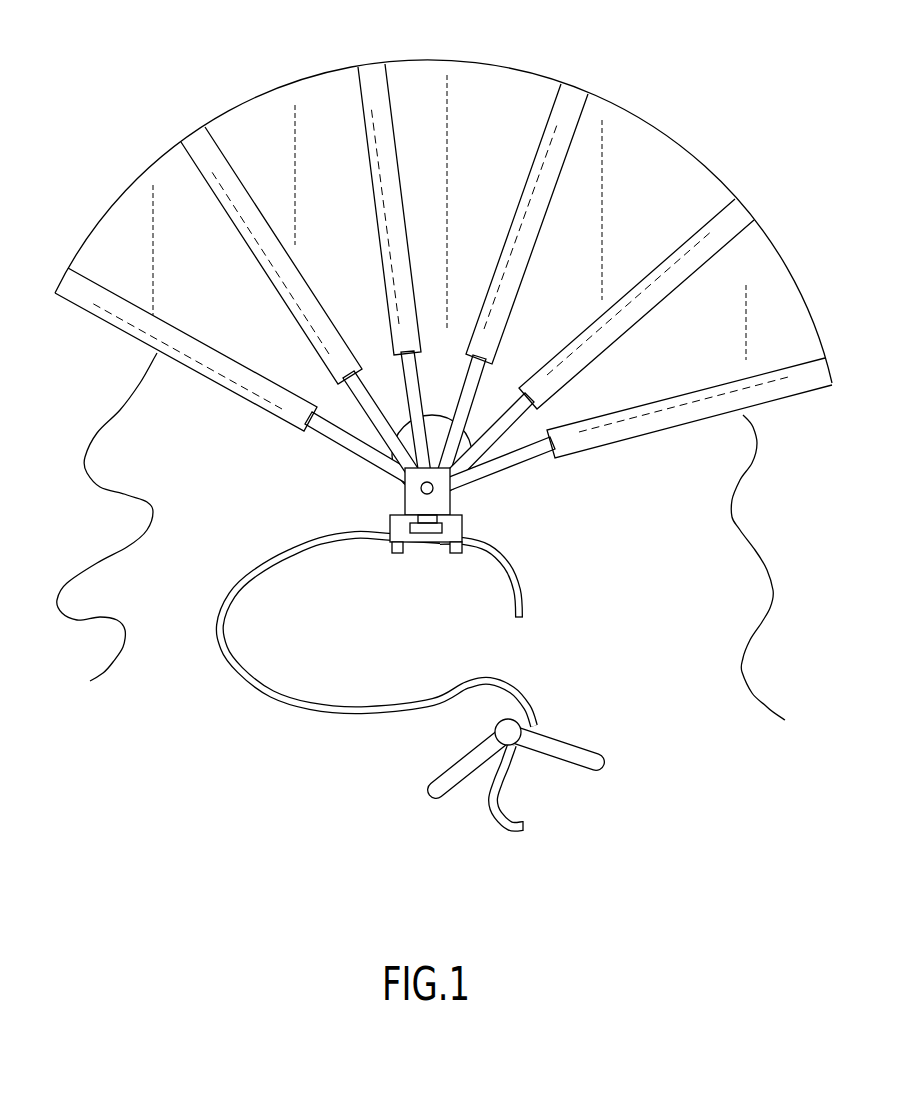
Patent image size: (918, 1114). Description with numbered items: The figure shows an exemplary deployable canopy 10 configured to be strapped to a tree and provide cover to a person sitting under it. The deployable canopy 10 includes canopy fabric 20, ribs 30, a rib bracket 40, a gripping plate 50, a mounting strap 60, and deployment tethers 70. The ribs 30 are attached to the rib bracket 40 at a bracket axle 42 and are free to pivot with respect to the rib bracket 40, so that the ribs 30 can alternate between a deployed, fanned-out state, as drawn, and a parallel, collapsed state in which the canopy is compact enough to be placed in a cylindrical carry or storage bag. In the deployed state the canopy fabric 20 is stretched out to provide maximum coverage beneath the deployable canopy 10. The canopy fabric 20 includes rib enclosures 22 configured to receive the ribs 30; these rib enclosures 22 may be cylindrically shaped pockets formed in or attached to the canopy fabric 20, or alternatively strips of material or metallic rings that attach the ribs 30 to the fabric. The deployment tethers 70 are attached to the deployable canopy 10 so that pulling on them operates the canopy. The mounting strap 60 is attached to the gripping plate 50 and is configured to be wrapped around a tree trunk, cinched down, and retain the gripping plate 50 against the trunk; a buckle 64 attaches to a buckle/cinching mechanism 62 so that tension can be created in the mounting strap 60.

The deployable canopy 10 is at (698, 67).
The canopy fabric 20 is at (672, 167).
The rib enclosures 22 is at (685, 270).
The ribs 30 is at (493, 428).
The rib bracket 40 is at (405, 498).
The bracket axle 42 is at (422, 481).
The gripping plate 50 is at (463, 524).
The mounting strap 60 is at (303, 553).
The buckle/cinching mechanism 62 is at (565, 742).
The buckle 64 is at (527, 598).
The deployment tethers 70 is at (148, 503).